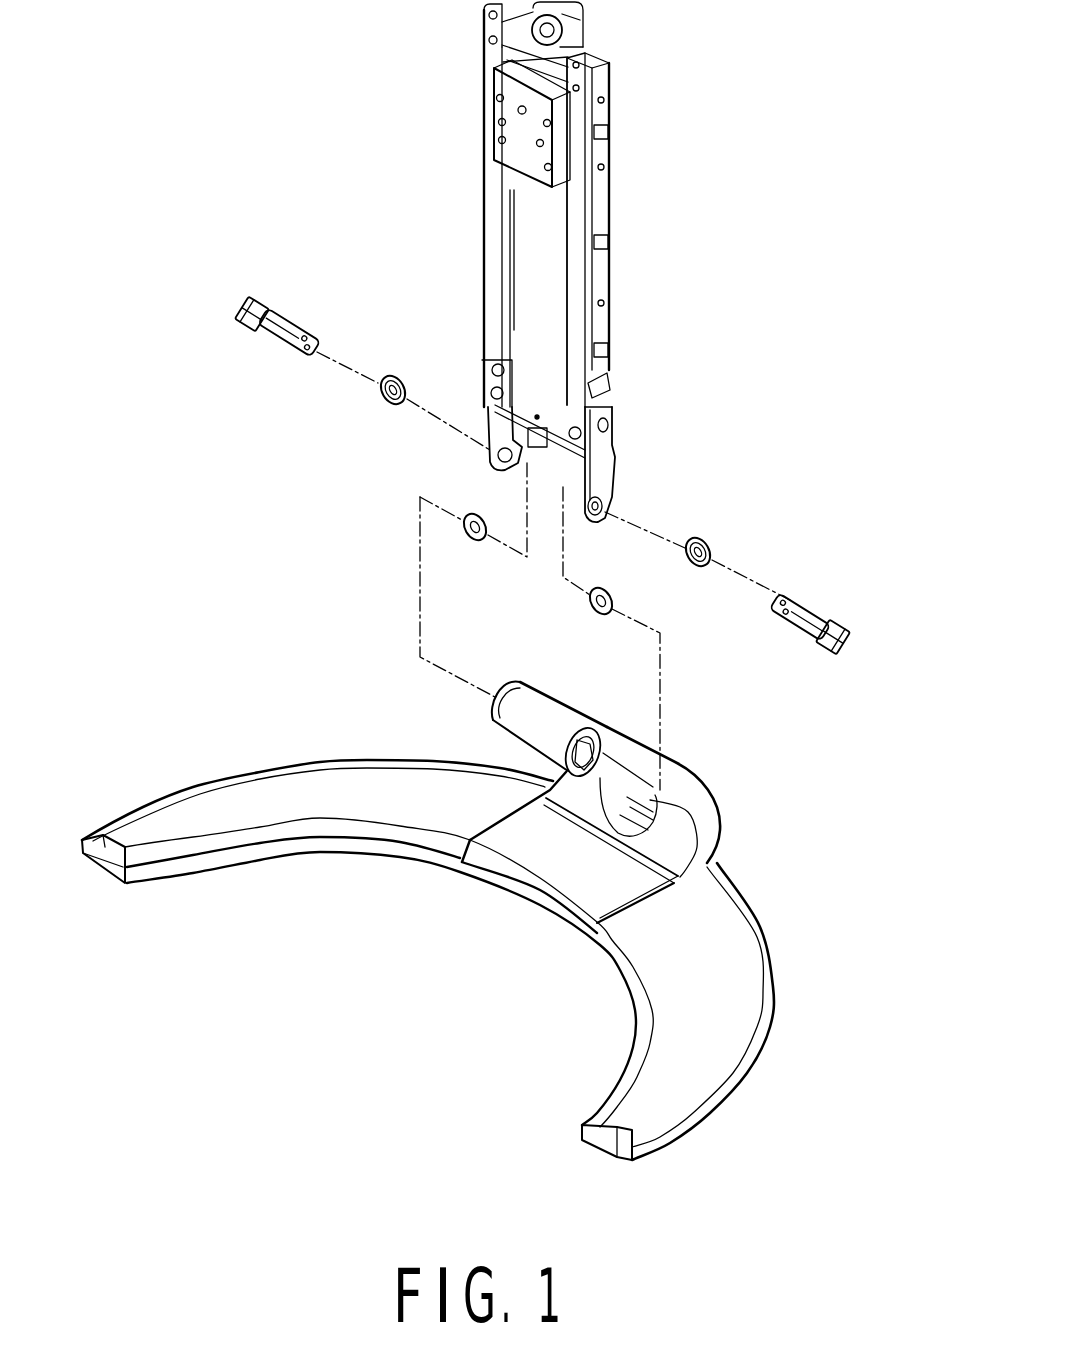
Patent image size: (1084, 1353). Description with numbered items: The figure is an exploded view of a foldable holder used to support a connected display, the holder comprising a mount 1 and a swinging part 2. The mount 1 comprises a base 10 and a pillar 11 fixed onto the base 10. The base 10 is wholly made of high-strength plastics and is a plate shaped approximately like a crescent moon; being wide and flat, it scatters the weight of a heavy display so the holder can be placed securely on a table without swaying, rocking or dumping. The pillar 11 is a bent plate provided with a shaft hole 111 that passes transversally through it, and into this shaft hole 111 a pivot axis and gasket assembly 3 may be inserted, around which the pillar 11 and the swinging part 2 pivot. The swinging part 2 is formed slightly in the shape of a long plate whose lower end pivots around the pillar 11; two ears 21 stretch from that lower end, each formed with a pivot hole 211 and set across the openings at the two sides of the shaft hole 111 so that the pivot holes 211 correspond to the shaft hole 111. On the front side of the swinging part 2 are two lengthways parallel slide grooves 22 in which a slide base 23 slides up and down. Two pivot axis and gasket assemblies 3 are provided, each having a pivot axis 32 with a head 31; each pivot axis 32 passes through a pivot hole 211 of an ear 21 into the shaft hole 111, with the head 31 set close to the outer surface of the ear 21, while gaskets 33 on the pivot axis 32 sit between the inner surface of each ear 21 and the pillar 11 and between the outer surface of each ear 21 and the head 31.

The mount 1 is at (156, 792).
The base 10 is at (703, 952).
The pillar 11 is at (700, 793).
The shaft hole 111 is at (608, 725).
The swinging part 2 is at (622, 188).
The ear 21 is at (602, 483).
The pivot hole 211 is at (602, 503).
The slide groove 22 is at (570, 275).
The slide base 23 is at (540, 112).
The pivot axis and gasket assembly 3 is at (403, 262).
The head 31 is at (252, 297).
The pivot axis 32 is at (315, 333).
The gasket 33 is at (398, 375).